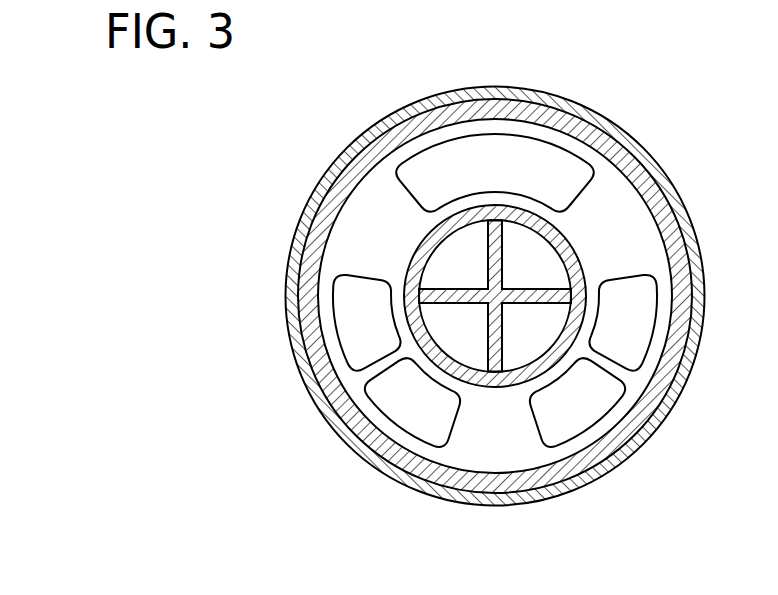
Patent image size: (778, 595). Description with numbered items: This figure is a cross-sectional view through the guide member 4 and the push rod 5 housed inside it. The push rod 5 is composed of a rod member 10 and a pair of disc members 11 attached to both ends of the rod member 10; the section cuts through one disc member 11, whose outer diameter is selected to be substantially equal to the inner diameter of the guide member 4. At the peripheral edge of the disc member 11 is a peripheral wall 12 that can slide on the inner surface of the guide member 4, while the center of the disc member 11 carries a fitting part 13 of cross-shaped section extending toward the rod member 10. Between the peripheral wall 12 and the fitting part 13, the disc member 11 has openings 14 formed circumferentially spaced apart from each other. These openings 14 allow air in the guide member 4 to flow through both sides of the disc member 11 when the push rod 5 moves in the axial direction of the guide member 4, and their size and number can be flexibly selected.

The guide member 4 is at (589, 99).
The push rod 5 is at (482, 433).
The rod member 10 is at (423, 252).
The disc member 11 is at (602, 225).
The peripheral wall 12 is at (545, 499).
The fitting part 13 is at (417, 337).
The opening 14 is at (485, 192).